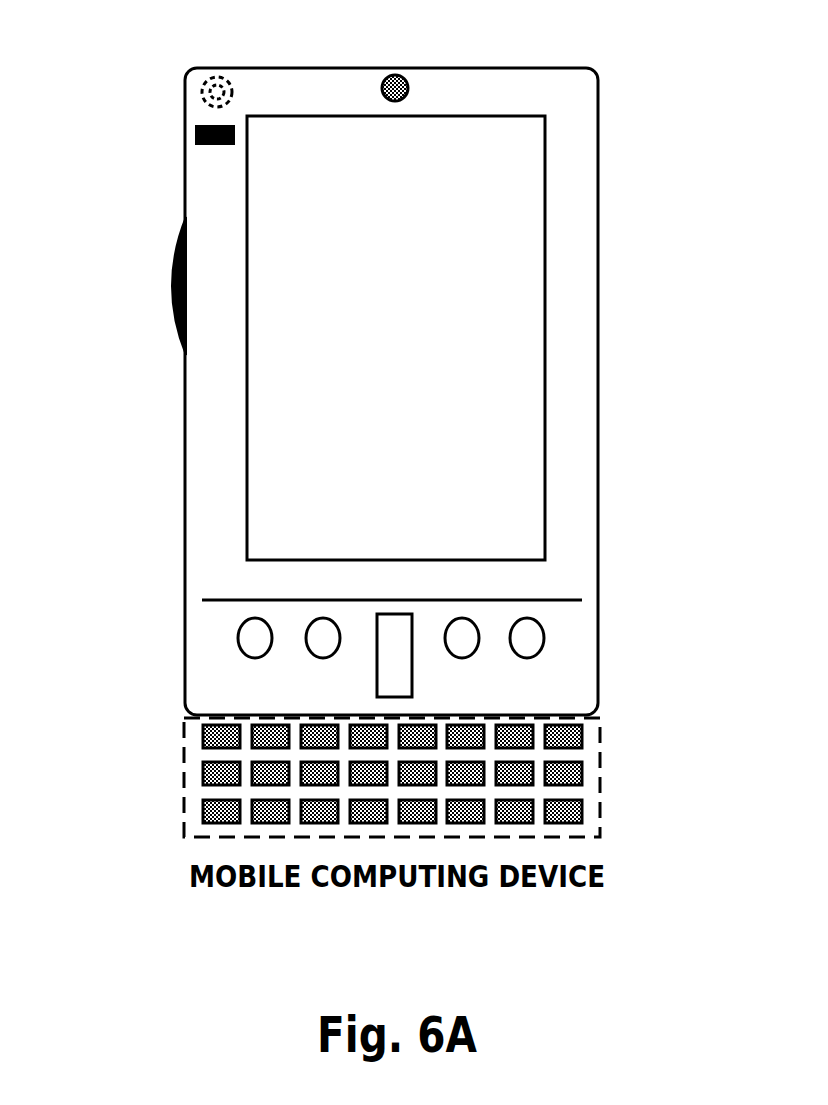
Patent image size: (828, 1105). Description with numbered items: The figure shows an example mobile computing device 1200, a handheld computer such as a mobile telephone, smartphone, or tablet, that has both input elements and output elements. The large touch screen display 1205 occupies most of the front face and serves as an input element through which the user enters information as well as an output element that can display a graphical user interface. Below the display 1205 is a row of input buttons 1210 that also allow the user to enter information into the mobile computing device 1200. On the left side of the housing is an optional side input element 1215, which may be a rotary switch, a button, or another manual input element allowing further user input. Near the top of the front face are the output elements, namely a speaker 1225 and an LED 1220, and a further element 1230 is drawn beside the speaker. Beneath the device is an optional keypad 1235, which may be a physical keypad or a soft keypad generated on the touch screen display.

The mobile computing device 1200 is at (600, 85).
The touch screen display 1205 is at (270, 498).
The input buttons 1210 is at (530, 650).
The side input element 1215 is at (162, 294).
The LED 1220 is at (195, 128).
The speaker 1225 is at (195, 84).
The camera 1230 is at (405, 85).
The keypad 1235 is at (183, 808).